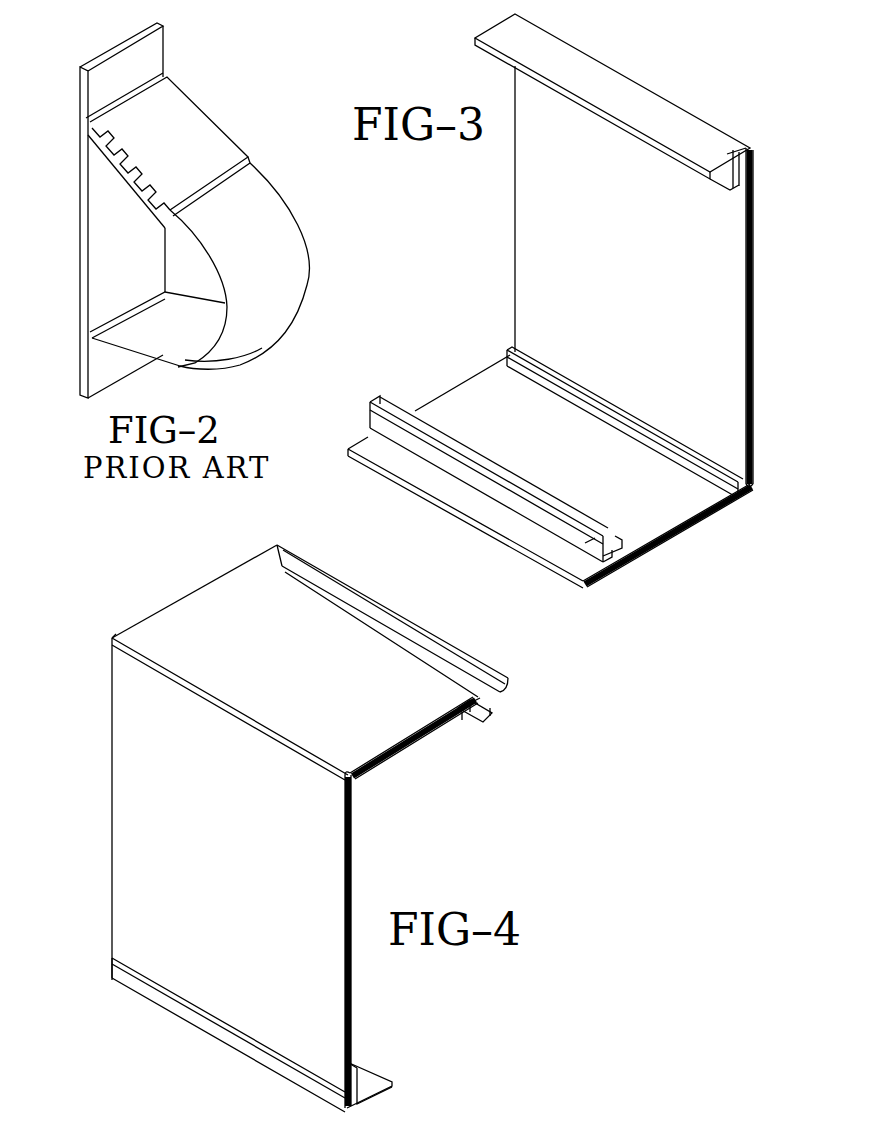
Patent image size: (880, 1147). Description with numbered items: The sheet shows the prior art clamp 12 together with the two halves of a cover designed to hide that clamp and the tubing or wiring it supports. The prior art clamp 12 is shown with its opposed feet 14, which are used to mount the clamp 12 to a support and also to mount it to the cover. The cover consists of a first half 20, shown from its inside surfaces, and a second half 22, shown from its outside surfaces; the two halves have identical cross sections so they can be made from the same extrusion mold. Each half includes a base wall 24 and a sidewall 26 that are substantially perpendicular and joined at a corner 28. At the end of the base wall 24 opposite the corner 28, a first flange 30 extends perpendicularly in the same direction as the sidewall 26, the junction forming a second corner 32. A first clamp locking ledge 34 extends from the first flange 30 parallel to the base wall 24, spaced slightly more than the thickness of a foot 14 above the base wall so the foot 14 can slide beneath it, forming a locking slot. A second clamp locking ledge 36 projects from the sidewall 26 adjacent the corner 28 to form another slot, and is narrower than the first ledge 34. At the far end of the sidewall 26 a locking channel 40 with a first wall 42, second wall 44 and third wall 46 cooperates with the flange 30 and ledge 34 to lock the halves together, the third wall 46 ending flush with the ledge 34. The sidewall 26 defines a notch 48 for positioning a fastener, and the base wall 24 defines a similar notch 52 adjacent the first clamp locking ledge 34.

In FIG. 2, the prior art clamp 12 is at (224, 114).
In FIG. 2, the feet 14 is at (165, 52).
In FIG. 3, the first half 20 is at (684, 538).
In FIG. 4, the second half 22 is at (228, 572).
In FIG. 3, the base wall 24 is at (535, 194).
In FIG. 4, the base wall 24 is at (132, 797).
In FIG. 3, the sidewall 26 is at (480, 390).
In FIG. 4, the sidewall 26 is at (212, 600).
In FIG. 3, the corner 28 is at (748, 492).
In FIG. 4, the corner 28 is at (112, 638).
In FIG. 3, the first flange 30 is at (615, 85).
In FIG. 4, the first flange 30 is at (390, 1097).
In FIG. 3, the second corner 32 is at (682, 105).
In FIG. 4, the second corner 32 is at (178, 1018).
In FIG. 3, the first clamp locking ledge 34 is at (727, 182).
In FIG. 4, the first clamp locking ledge 34 is at (375, 1086).
In FIG. 3, the second clamp locking ledge 36 is at (570, 385).
In FIG. 4, the second clamp locking ledge 36 is at (362, 782).
In FIG. 3, the locking channel 40 is at (517, 473).
In FIG. 4, the locking channel 40 is at (490, 728).
In FIG. 3, the first wall 42 is at (626, 536).
In FIG. 4, the first wall 42 is at (462, 722).
In FIG. 3, the second wall 44 is at (620, 560).
In FIG. 4, the second wall 44 is at (468, 700).
In FIG. 3, the third wall 46 is at (583, 538).
In FIG. 4, the third wall 46 is at (494, 712).
In FIG. 4, the notch 48 is at (322, 592).
In FIG. 4, the notch 52 is at (240, 1040).